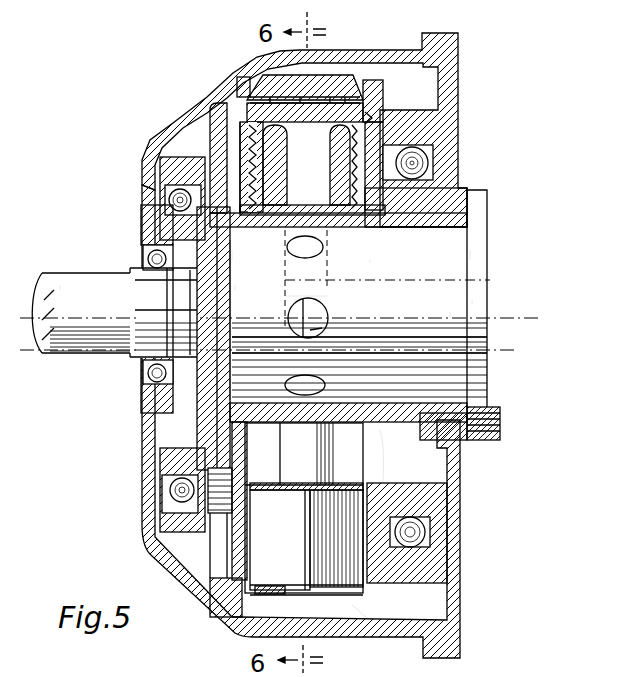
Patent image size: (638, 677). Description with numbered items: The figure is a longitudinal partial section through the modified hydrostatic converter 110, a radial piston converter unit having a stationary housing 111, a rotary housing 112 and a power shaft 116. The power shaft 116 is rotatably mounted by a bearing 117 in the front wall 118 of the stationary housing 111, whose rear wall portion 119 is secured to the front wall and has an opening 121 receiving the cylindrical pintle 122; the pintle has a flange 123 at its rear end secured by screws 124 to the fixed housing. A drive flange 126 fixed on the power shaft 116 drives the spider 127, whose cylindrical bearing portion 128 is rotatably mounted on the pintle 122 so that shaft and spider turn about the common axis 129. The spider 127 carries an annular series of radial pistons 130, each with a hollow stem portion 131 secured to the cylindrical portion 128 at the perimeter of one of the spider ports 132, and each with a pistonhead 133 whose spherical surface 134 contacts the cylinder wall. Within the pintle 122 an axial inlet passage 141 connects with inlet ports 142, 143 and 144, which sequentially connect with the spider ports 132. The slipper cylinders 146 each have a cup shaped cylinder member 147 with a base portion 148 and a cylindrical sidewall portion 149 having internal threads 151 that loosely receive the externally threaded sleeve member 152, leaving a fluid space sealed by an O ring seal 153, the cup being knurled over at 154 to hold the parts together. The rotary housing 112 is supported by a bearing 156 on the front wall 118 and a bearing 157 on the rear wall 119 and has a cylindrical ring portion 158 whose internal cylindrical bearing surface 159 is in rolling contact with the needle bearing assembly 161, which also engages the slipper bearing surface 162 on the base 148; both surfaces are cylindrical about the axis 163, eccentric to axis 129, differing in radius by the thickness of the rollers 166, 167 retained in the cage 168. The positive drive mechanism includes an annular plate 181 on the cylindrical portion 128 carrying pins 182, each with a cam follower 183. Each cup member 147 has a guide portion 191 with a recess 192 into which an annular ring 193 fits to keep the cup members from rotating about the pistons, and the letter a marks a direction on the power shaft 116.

The modified hydrostatic converter 110 is at (115, 125).
The stationary housing 111 is at (183, 113).
The rotary housing 112 is at (207, 118).
The power shaft 116 is at (115, 290).
The bearing 117 is at (147, 250).
The front wall 118 is at (147, 163).
The rear wall portion 119 is at (452, 173).
The opening 121 is at (458, 230).
The cylindrical pintle 122 is at (458, 262).
The flange 123 is at (478, 302).
The screws 124 is at (500, 414).
The drive flange 126 is at (235, 263).
The spider 127 is at (222, 430).
The cylindrical bearing portion 128 is at (383, 427).
The common axis 129 is at (452, 315).
The radial pistons 130 is at (258, 215).
The hollow stem portion 131 is at (276, 468).
The spider ports 132 is at (257, 285).
The pistonhead 133 is at (363, 140).
The spherical surface 134 is at (272, 132).
The axial inlet passage 141 is at (493, 366).
The inlet port 142 is at (323, 250).
The inlet port 143 is at (328, 308).
The inlet port 144 is at (312, 430).
The slipper cylinders 146 is at (372, 122).
The cup shaped cylinder member 147 is at (250, 108).
The base portion 148 is at (270, 117).
The cylindrical sidewall portion 149 is at (227, 127).
The internal threads 151 is at (372, 200).
The externally threaded sleeve member 152 is at (322, 252).
The O ring seal 153 is at (288, 230).
The knurled portion 154 is at (372, 230).
The bearing 156 is at (172, 198).
The bearing 157 is at (410, 160).
The cylindrical ring portion 158 is at (247, 80).
The internal cylindrical bearing surface 159 is at (297, 107).
The needle bearing assembly 161 is at (343, 93).
The slipper bearing surface 162 is at (367, 117).
The axis 163 is at (252, 350).
The rollers 166 is at (285, 592).
The rollers 167 is at (340, 603).
The cage 168 is at (310, 593).
The annular plate 181 is at (233, 430).
The pins 182 is at (230, 490).
The cam follower 183 is at (223, 507).
The guide portion 191 is at (350, 165).
The recess 192 is at (363, 153).
The annular ring 193 is at (360, 183).
The rotation arrow a is at (70, 292).